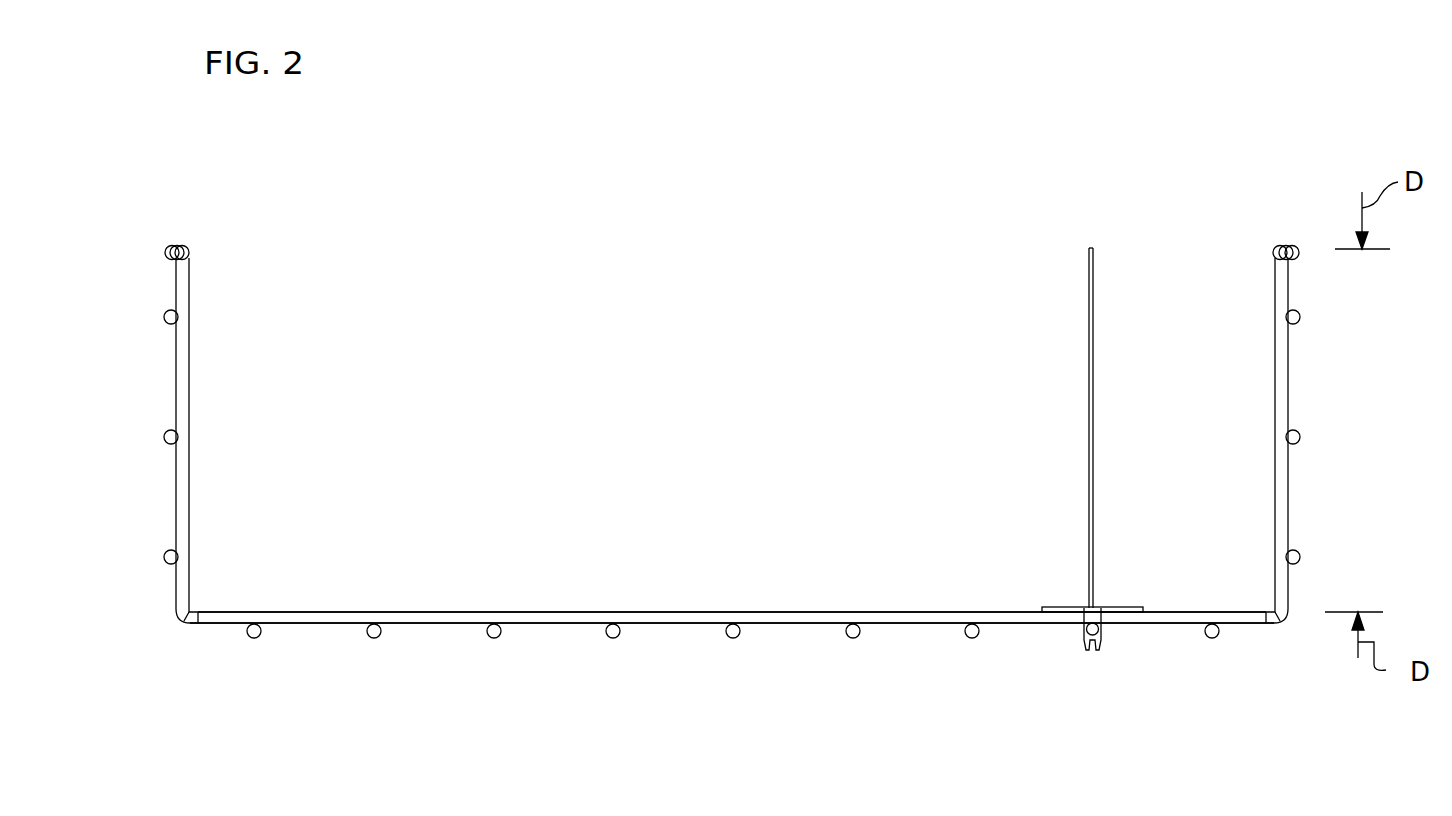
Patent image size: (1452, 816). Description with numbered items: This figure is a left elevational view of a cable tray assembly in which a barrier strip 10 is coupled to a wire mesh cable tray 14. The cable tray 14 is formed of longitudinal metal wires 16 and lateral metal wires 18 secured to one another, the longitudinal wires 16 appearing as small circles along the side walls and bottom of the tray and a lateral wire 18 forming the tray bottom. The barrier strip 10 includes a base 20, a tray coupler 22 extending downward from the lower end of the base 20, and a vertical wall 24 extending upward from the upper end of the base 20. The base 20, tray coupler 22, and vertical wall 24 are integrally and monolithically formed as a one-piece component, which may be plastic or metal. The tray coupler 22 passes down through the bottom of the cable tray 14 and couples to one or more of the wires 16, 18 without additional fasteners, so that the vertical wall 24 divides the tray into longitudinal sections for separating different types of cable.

The barrier strip 10 is at (1122, 251).
The cable tray 14 is at (444, 654).
The longitudinal metal wires 16 is at (164, 436).
The lateral metal wires 18 is at (665, 615).
The base 20 is at (1127, 597).
The tray coupler 22 is at (1114, 653).
The vertical wall 24 is at (1095, 456).